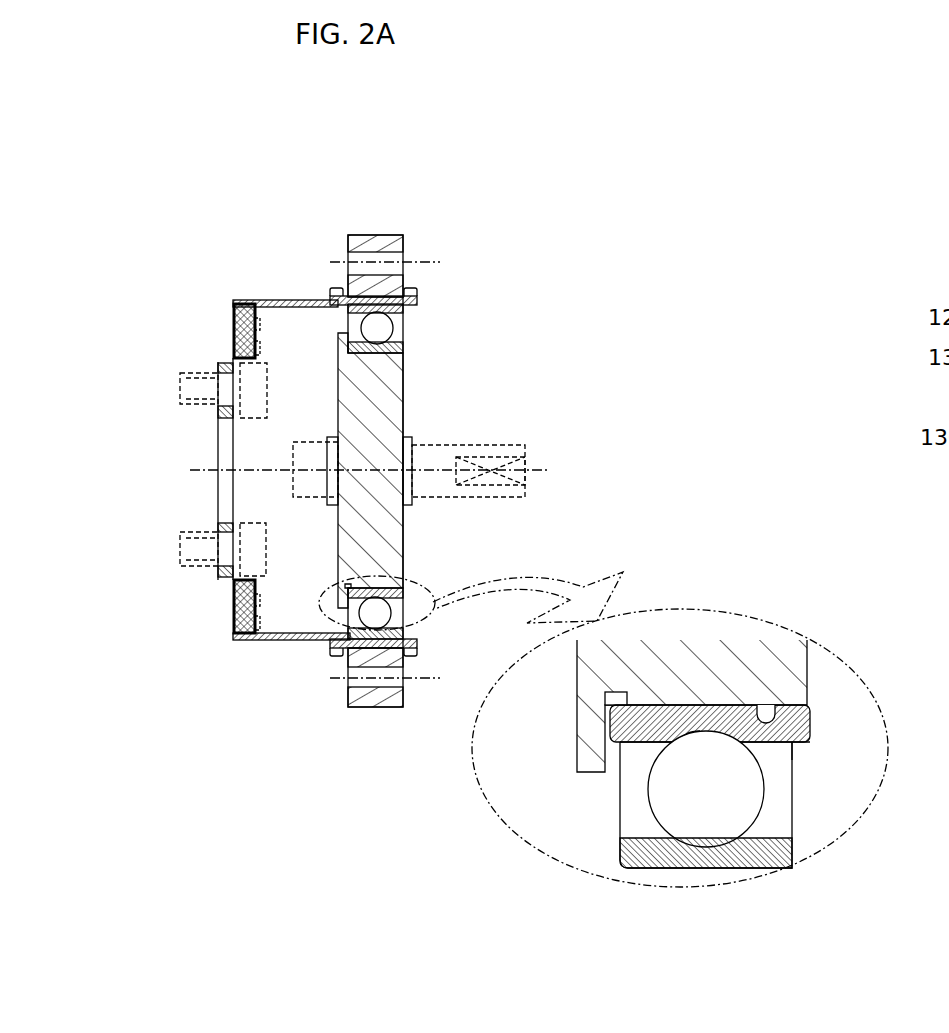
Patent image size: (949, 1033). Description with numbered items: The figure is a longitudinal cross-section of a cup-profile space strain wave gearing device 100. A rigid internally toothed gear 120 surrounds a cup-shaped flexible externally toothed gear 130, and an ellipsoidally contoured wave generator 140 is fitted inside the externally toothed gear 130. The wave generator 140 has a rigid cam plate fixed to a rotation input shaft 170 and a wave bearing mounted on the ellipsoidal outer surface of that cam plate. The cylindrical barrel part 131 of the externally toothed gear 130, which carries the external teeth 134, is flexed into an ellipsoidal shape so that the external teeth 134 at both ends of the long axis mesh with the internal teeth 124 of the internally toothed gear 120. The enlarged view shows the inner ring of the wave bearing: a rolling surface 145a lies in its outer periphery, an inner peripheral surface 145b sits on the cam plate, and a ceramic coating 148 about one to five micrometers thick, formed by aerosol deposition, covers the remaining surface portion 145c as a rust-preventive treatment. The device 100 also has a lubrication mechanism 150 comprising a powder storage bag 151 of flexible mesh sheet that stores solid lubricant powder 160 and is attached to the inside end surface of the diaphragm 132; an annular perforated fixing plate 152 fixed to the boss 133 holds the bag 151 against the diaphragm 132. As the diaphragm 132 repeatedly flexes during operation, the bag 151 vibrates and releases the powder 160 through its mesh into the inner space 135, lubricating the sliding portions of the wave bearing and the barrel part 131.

The cup-profile space strain wave gearing device 100 is at (412, 208).
The rigid internally toothed gear 120 is at (406, 278).
The internal teeth 124 is at (409, 305).
The flexible externally toothed gear 130 is at (300, 295).
The cylindrical barrel part 131 is at (277, 300).
The diaphragm 132 is at (236, 345).
The boss 133 is at (221, 413).
The external teeth 134 is at (358, 300).
The inner space 135 is at (276, 438).
The wave generator 140 is at (411, 394).
The rolling surface 145a is at (722, 715).
The inner peripheral surface 145b is at (683, 730).
The surface portion 145c is at (792, 749).
The ceramic coating 148 is at (808, 746).
The lubrication mechanism 150 is at (232, 301).
The powder storage bag 151 is at (229, 316).
The fixing plate 152 is at (237, 340).
The solid lubricant powder 160 is at (257, 317).
The rotation input shaft 170 is at (443, 440).